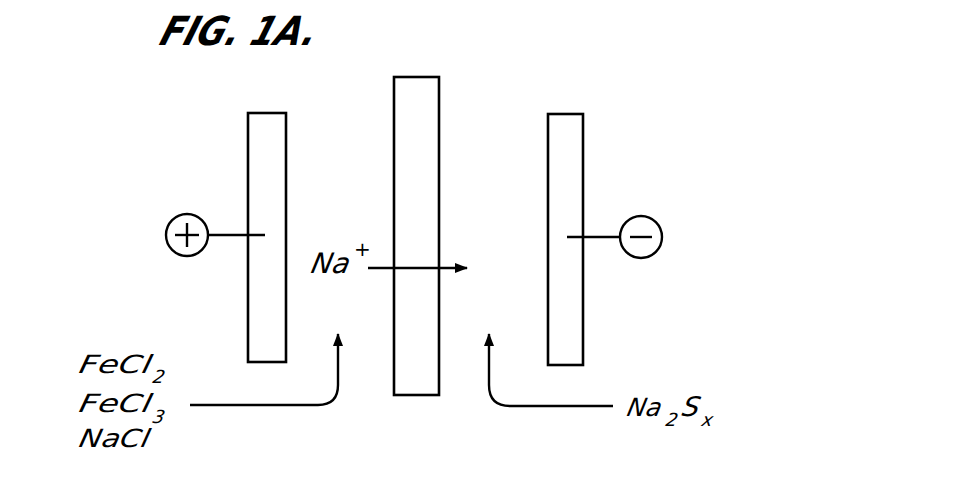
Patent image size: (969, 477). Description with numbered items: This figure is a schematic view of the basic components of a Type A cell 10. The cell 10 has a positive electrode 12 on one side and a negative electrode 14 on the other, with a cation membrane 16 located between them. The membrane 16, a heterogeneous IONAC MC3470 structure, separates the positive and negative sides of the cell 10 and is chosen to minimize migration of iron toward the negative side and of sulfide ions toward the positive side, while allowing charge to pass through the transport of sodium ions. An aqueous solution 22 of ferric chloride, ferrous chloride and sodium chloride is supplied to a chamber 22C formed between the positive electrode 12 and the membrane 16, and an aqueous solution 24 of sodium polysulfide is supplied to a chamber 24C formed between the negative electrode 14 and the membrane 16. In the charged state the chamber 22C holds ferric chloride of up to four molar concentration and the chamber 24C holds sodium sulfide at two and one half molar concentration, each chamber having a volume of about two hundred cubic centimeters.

The Type A cell 10 is at (468, 57).
The positive electrode 12 is at (258, 131).
The negative electrode 14 is at (574, 130).
The cation membrane 16 is at (408, 77).
The aqueous solution of FeCl3, FeCl2 and NaCl 22 is at (235, 405).
The chamber 22C is at (345, 208).
The aqueous solution of Na2Sx 24 is at (534, 410).
The chamber 24C is at (500, 212).